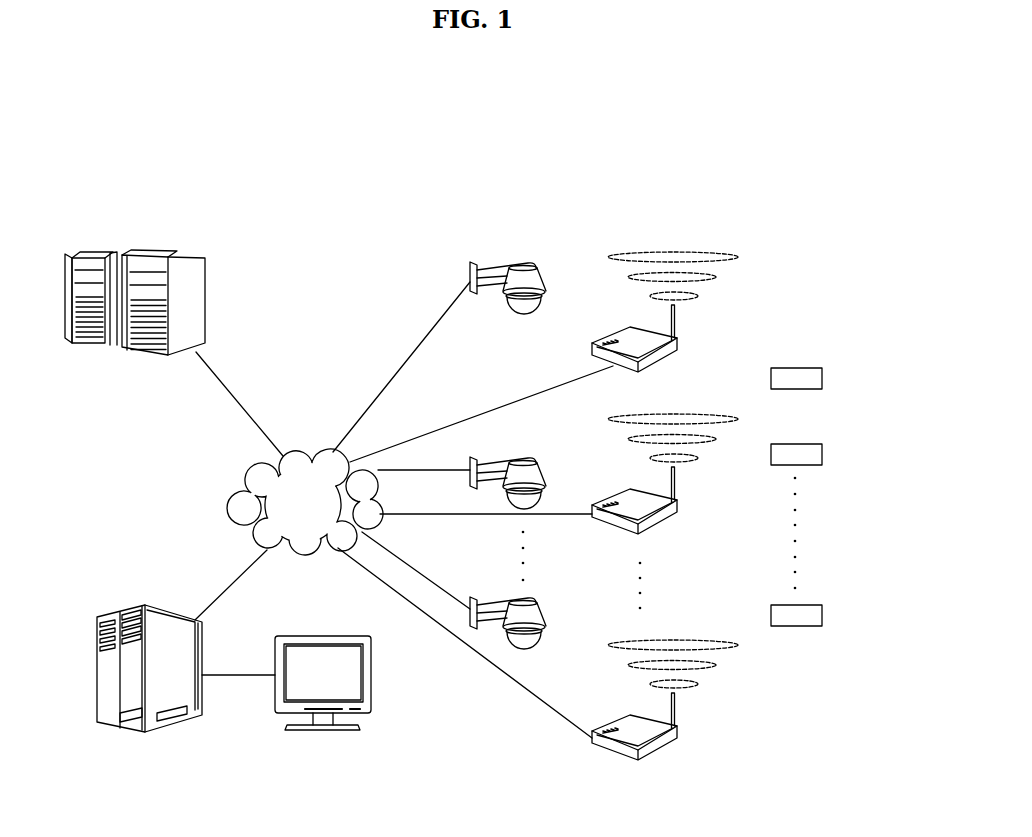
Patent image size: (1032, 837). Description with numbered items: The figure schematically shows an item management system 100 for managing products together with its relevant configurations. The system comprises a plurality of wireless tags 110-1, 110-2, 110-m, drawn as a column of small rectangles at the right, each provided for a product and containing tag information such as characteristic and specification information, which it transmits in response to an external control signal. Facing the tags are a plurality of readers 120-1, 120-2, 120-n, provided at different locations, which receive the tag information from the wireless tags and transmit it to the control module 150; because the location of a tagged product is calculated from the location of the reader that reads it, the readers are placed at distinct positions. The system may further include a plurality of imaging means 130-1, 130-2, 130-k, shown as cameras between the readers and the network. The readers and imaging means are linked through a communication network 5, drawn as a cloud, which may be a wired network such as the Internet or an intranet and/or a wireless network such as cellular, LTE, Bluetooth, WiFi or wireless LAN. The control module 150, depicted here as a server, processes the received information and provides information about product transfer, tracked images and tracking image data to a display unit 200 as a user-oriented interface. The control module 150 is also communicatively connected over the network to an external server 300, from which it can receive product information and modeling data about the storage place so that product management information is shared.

The item management system 100 is at (730, 148).
The communication network 5 is at (295, 452).
The external server 300 is at (172, 252).
The control module 150 is at (125, 608).
The display unit 200 is at (371, 686).
The imaging means 130-1 is at (503, 262).
The imaging means 130-2 is at (527, 456).
The imaging means 130-k is at (527, 600).
The reader 120-1 is at (662, 355).
The reader 120-2 is at (662, 517).
The reader 120-n is at (662, 745).
The wireless tag 110-1 is at (808, 367).
The wireless tag 110-2 is at (808, 443).
The wireless tag 110-m is at (808, 604).